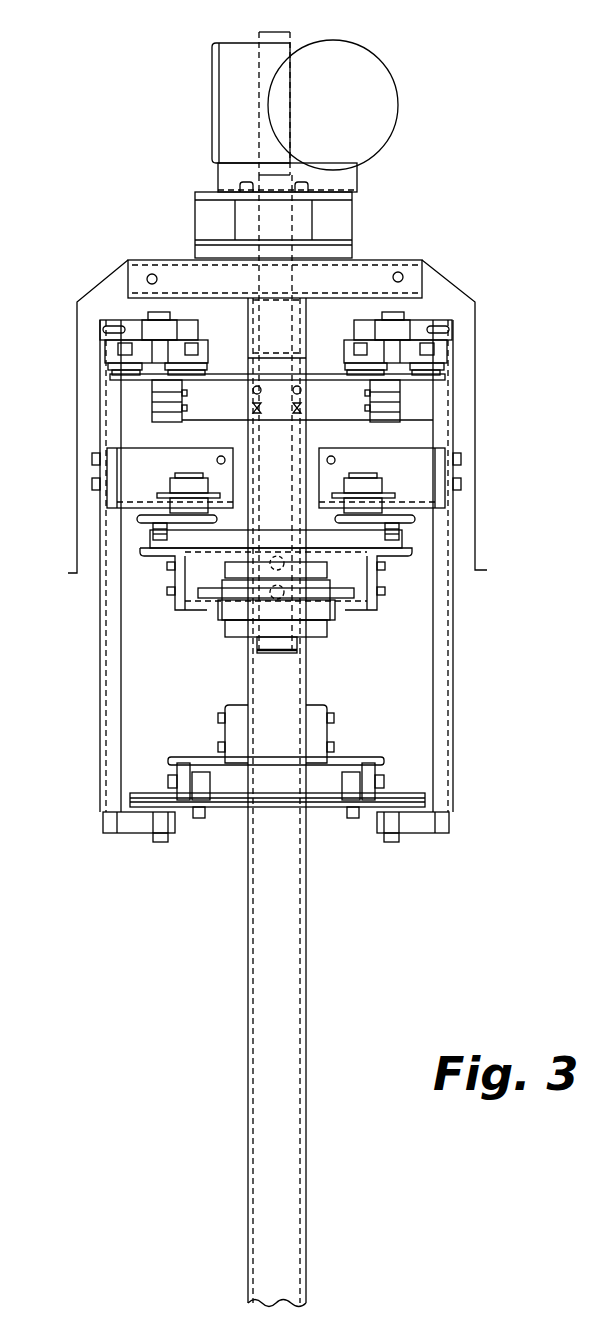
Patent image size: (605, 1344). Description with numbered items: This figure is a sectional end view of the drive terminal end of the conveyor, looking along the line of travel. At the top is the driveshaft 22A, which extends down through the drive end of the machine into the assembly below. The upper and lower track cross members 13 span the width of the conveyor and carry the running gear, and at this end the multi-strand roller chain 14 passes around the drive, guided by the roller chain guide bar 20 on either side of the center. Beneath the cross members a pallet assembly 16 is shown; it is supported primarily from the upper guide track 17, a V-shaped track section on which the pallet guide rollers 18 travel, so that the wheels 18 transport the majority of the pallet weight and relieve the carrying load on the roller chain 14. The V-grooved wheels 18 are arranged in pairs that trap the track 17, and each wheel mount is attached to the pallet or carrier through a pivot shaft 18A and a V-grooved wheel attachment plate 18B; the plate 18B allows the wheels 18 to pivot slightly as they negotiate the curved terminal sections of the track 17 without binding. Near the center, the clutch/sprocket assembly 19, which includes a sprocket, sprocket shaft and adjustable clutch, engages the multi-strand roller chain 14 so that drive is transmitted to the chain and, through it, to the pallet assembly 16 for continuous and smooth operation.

The driveshaft 22A is at (290, 32).
The upper and lower track cross members 13 is at (328, 372).
The multi-strand roller chain 14 is at (400, 525).
The pallet assembly 16 is at (100, 688).
The upper guide track 17 is at (406, 374).
The pallet guide rollers 18 is at (438, 367).
The pivot shaft 18A is at (395, 312).
The V grooved wheel attachment plate 18B is at (438, 350).
The clutch/sprocket assembly 19 is at (163, 487).
The roller chain guide bar 20 is at (133, 520).